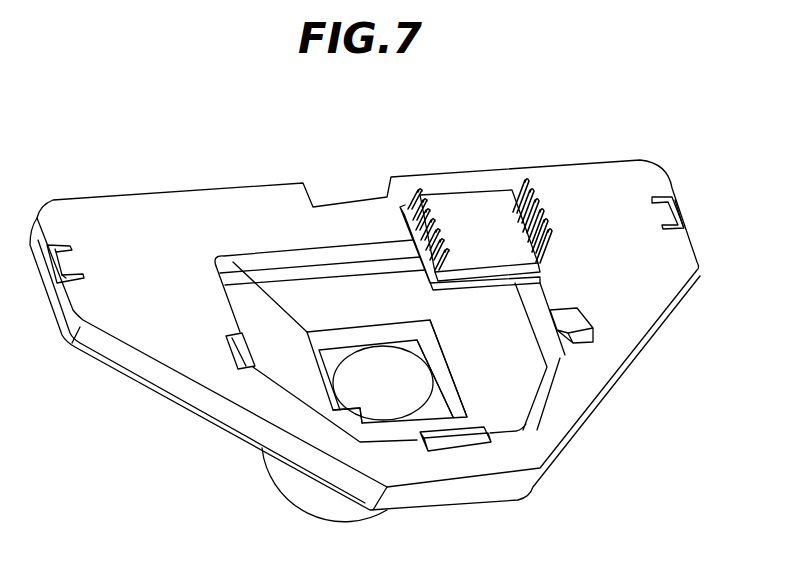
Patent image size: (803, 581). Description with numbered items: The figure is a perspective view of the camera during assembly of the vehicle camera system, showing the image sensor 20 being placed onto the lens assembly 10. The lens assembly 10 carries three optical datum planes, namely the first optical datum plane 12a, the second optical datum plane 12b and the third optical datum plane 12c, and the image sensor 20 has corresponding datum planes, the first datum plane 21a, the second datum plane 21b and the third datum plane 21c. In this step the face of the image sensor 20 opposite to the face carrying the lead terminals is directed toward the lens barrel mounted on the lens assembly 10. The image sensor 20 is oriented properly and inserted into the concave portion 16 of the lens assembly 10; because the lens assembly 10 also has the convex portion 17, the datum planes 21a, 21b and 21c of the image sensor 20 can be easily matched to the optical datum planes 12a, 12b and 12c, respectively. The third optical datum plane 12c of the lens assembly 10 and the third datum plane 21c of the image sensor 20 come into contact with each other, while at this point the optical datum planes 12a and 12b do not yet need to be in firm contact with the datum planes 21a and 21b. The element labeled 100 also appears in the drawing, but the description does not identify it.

The lens assembly 10 is at (252, 218).
The first optical datum plane 12a is at (374, 334).
The second optical datum plane 12b is at (443, 377).
The third optical datum plane 12c is at (304, 320).
The concave portion 16 is at (373, 386).
The convex portion 17 is at (352, 417).
The image sensor 20 is at (458, 233).
The first datum plane 21a is at (496, 180).
The second datum plane 21b is at (540, 211).
The third datum plane 21c is at (480, 283).
The shaft 100 is at (300, 493).